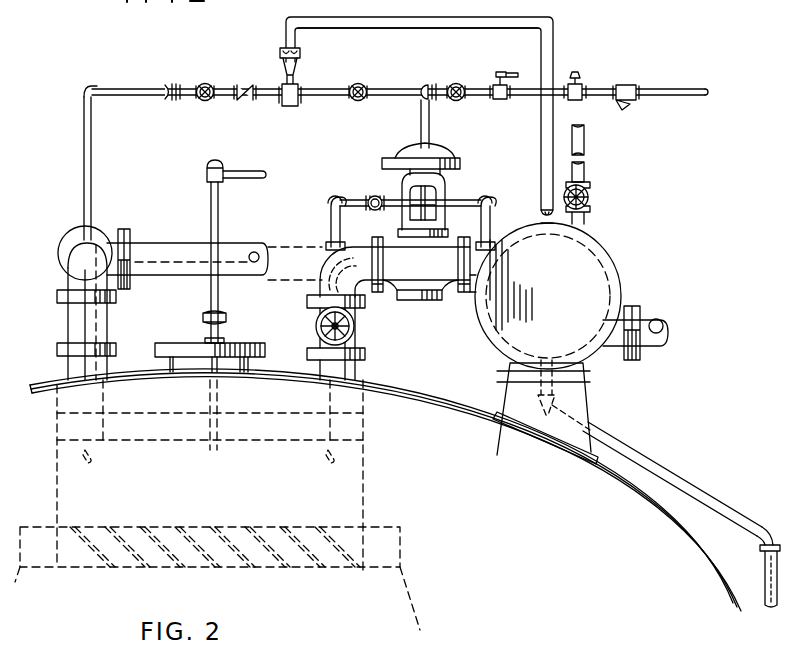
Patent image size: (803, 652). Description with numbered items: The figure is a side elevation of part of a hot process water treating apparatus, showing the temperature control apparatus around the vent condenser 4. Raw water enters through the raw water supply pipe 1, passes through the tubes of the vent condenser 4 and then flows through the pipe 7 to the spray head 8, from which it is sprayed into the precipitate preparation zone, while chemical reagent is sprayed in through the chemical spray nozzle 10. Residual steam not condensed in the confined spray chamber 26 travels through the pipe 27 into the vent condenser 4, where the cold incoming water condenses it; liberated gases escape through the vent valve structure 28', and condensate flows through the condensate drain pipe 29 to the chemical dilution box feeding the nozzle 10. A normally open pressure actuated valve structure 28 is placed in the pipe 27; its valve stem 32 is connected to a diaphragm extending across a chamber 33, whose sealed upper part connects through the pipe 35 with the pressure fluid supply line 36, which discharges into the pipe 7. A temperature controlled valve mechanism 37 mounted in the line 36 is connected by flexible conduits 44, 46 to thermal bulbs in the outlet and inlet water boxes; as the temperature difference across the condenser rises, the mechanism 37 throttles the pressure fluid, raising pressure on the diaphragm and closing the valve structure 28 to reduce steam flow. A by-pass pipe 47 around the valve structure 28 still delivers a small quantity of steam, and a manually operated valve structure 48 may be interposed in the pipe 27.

The raw water supply pipe 1 is at (648, 318).
The vent condenser 4 is at (603, 275).
The pipe or conduit 7 is at (72, 265).
The spray head 8 is at (350, 432).
The chemical spray nozzle 10 is at (243, 172).
The confined spray chamber 26 is at (345, 505).
The conduit or pipe 27 is at (345, 376).
The pressure actuated valve structure 28 is at (448, 205).
The vent valve structure 28' is at (603, 174).
The condensate drain pipe 29 is at (662, 468).
The valve stem 32 is at (421, 205).
The chamber 33 is at (452, 155).
The pipe 35 is at (430, 133).
The pressure fluid supply line 36 is at (93, 134).
The temperature controlled valve mechanism 37 is at (309, 79).
The flexible conduit 44 is at (450, 24).
The flexible conduit 46 is at (432, 30).
The by-pass pipe 47 is at (357, 203).
The manually operated valve structure 48 is at (356, 328).